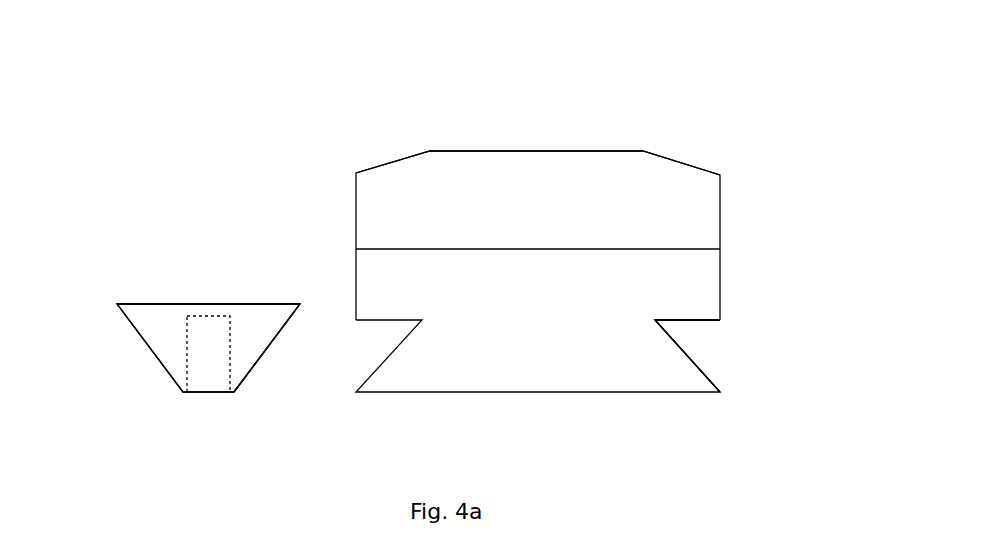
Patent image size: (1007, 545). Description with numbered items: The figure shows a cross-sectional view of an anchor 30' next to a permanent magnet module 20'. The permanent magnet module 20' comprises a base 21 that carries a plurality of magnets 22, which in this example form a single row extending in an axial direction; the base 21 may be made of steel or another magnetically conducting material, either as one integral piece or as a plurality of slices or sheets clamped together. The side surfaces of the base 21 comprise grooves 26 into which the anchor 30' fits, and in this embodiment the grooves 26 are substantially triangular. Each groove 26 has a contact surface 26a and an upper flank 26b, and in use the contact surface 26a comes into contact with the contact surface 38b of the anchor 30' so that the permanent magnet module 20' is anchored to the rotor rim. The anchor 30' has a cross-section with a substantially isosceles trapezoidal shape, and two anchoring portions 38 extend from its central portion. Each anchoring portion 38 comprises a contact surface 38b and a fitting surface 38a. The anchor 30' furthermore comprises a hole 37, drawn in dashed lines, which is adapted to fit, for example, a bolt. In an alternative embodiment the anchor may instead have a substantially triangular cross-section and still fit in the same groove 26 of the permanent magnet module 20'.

The permanent magnet module 20' is at (580, 207).
The magnets 22 is at (553, 180).
The base 21 is at (430, 357).
The groove 26 is at (728, 359).
The contact surface 26a is at (700, 367).
The upper flank of recess 26b is at (693, 323).
The anchor 30' is at (157, 359).
The anchoring portion 38 is at (138, 313).
The fitting surface 38a is at (272, 302).
The contact surface 38b is at (257, 362).
The hole 37 is at (208, 365).